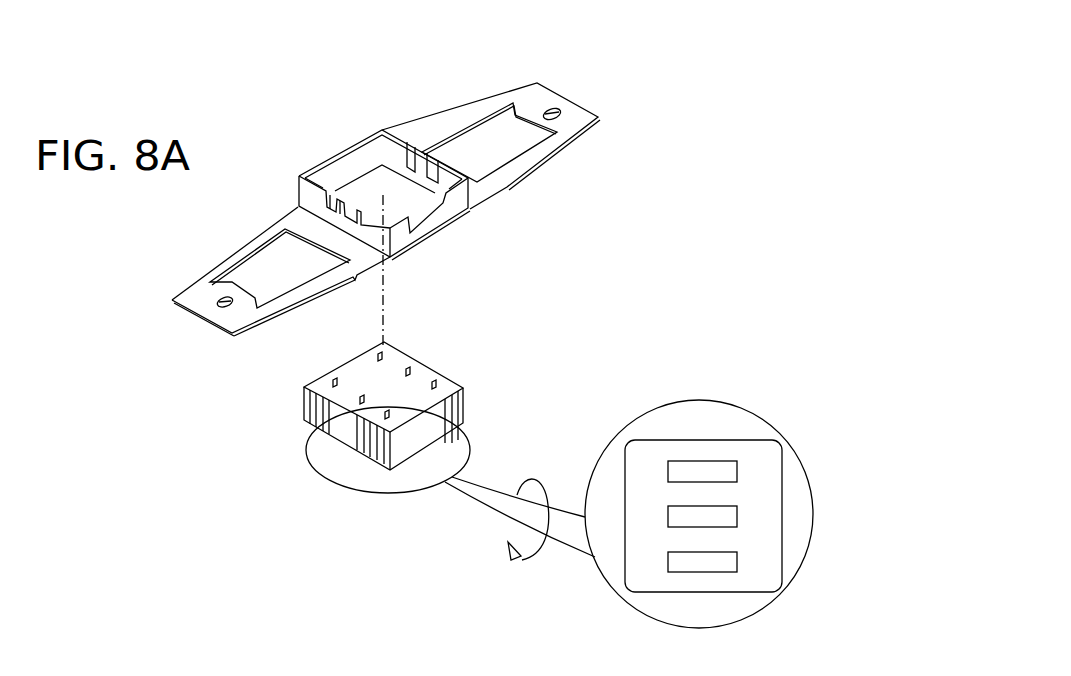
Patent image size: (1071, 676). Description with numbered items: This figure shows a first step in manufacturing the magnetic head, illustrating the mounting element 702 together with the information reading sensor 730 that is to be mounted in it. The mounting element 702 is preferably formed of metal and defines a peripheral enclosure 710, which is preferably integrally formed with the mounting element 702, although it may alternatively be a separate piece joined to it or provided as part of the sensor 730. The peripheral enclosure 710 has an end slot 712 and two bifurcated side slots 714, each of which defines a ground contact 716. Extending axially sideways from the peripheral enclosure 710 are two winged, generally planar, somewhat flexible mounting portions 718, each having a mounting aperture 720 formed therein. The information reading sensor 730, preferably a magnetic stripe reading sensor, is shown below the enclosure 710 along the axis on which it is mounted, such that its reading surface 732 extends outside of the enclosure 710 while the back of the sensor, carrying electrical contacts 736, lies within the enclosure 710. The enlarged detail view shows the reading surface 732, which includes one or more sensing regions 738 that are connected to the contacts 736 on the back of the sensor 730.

The mounting element 702 is at (349, 105).
The peripheral enclosure 710 is at (463, 197).
The end slot 712 is at (418, 215).
The bifurcated side slots 714 is at (350, 212).
The ground contact 716 is at (342, 207).
The mounting portions 718 is at (580, 130).
The mounting apertures 720 is at (548, 118).
The information reading sensor 730 is at (457, 408).
The reading surface 732 is at (717, 450).
The electrical contacts 736 is at (410, 370).
The sensing regions 738 is at (728, 562).